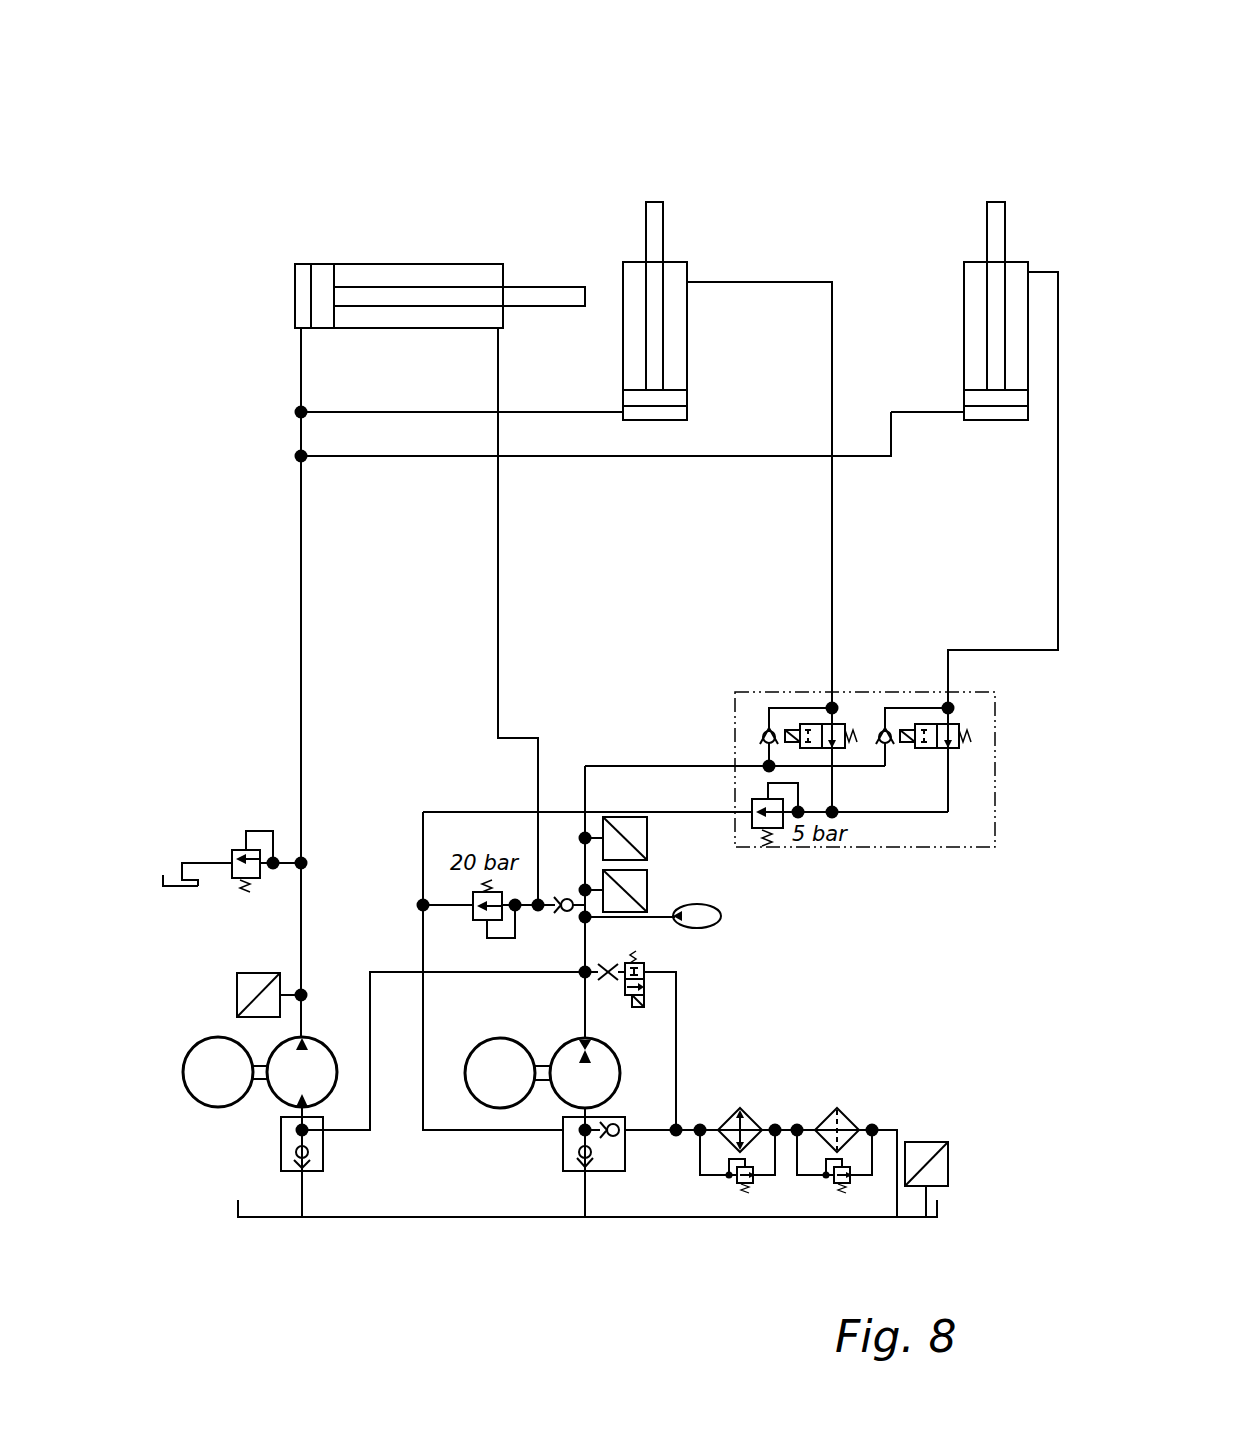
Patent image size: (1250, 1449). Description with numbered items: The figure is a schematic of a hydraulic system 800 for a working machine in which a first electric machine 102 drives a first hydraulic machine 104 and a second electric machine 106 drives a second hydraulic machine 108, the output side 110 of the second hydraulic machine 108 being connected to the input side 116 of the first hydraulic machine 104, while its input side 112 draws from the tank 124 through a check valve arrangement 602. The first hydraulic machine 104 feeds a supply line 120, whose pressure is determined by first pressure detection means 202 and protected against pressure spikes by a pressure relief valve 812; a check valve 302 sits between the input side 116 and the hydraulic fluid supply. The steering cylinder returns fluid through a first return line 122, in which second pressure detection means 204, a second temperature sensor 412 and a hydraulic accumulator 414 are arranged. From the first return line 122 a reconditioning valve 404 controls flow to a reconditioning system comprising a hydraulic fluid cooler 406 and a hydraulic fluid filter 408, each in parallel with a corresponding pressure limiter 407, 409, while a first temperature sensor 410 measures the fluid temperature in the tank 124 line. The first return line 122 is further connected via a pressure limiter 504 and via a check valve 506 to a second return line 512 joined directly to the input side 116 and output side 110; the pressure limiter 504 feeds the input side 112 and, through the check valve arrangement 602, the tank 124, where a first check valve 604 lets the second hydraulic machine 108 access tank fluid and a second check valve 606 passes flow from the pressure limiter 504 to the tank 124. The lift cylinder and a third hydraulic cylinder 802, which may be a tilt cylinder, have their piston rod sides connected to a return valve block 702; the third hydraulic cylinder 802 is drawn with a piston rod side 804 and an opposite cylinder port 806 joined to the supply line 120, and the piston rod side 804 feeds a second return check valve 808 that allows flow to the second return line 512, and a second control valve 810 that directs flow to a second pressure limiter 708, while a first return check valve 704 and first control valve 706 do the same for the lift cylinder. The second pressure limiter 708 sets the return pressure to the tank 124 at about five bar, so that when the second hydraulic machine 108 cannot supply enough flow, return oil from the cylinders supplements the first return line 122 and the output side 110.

The hydraulic system 800 is at (950, 88).
The third hydraulic cylinder 802 is at (964, 262).
The piston rod side 804 is at (1028, 268).
The cylinder port line 806 is at (970, 420).
The supply line 120 is at (302, 557).
The first return line 122 is at (500, 558).
The return valve block 702 is at (995, 790).
The first return check valve 704 is at (762, 732).
The first control valve 706 is at (835, 748).
The second pressure limiter 708 is at (770, 830).
The second return check valve 808 is at (876, 732).
The second control valve 810 is at (948, 722).
The second return line 512 is at (640, 765).
The second pressure detection means 204 is at (620, 817).
The second temperature sensor 412 is at (650, 895).
The hydraulic accumulator 414 is at (720, 922).
The reconditioning valve 404 is at (644, 968).
The pressure limiter 504 is at (473, 900).
The check valve 506 is at (563, 912).
The pressure relief valve 812 is at (240, 850).
The first pressure detection means 202 is at (265, 973).
The first electric machine 102 is at (215, 1042).
The first hydraulic machine 104 is at (277, 1098).
The second electric machine 106 is at (490, 1040).
The second hydraulic machine 108 is at (650, 1052).
The output side 110 is at (580, 1040).
The input side 112 is at (583, 1108).
The input side 116 is at (323, 1118).
The check valve 302 is at (310, 1152).
The check valve arrangement 602 is at (612, 1118).
The first check valve 604 is at (590, 1162).
The second check valve 606 is at (622, 1136).
The hydraulic fluid cooler 406 is at (760, 1112).
The hydraulic fluid filter 408 is at (848, 1108).
The first temperature sensor 410 is at (930, 1142).
The pressure limiter 407 is at (752, 1180).
The pressure limiter 409 is at (852, 1180).
The tank 124 is at (398, 1218).